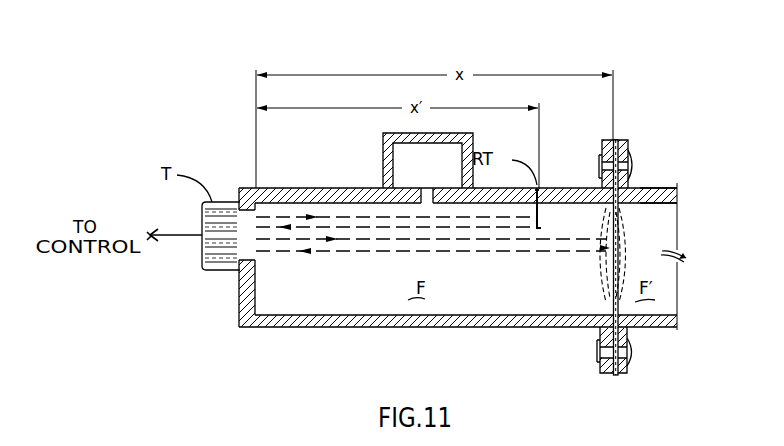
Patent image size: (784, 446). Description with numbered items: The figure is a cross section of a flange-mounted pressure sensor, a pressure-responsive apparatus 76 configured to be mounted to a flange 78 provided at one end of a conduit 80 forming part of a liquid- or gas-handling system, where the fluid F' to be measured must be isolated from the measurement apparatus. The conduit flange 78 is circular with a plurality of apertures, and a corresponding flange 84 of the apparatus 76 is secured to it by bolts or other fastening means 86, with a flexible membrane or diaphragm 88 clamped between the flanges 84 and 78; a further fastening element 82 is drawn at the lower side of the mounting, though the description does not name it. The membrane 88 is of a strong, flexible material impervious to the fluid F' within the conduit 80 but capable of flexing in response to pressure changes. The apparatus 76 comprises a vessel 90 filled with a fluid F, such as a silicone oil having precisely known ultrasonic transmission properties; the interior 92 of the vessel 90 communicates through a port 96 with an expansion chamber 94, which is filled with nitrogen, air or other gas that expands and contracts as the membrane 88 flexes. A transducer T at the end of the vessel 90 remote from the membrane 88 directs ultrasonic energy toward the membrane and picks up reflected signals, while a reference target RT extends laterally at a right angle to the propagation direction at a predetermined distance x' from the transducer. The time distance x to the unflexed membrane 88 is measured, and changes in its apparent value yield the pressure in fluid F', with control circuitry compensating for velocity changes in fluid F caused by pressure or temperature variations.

The pressure-responsive apparatus 76 is at (566, 164).
The flange 78 is at (633, 158).
The conduit 80 is at (643, 190).
The lower nut 82 is at (630, 368).
The corresponding flange 84 is at (602, 372).
The fastening means 86 is at (632, 345).
The membrane 88 is at (618, 142).
The vessel 90 is at (357, 330).
The interior 92 is at (470, 303).
The expansion chamber 94 is at (383, 163).
The port 96 is at (430, 188).